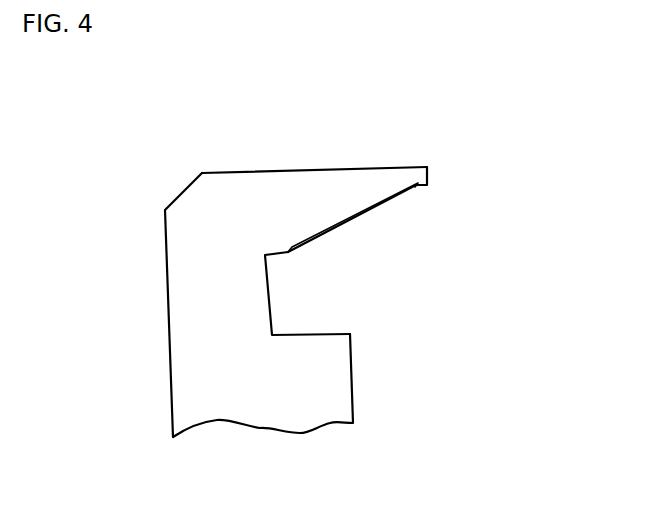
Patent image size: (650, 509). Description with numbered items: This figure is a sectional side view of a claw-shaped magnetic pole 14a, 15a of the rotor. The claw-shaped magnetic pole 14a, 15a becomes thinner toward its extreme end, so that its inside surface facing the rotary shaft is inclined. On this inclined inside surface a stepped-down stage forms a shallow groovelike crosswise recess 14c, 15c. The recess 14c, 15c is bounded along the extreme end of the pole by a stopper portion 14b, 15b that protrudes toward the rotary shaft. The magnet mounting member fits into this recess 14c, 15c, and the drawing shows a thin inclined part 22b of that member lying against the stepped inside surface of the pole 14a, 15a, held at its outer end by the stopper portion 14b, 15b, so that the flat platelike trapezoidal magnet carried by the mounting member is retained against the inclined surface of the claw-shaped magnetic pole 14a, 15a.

The claw-shaped magnetic pole 14a is at (314, 153).
The claw-shaped magnetic pole 15a is at (290, 180).
The stopper portion 14b is at (469, 202).
The stopper portion 15b is at (423, 187).
The recess 14c is at (326, 278).
The recess 15c is at (311, 231).
The inclined strip / sealing member 22b is at (362, 218).